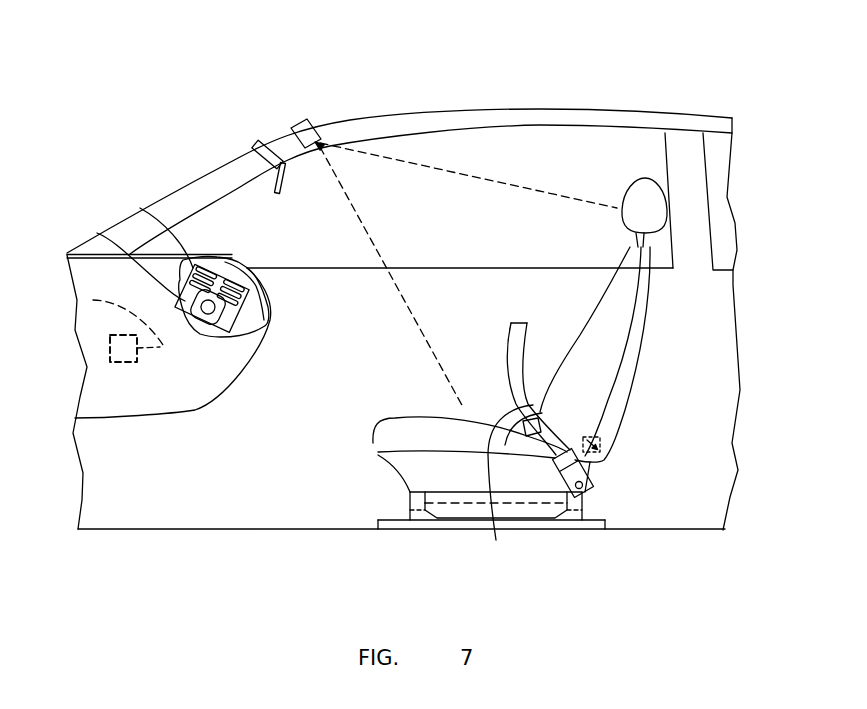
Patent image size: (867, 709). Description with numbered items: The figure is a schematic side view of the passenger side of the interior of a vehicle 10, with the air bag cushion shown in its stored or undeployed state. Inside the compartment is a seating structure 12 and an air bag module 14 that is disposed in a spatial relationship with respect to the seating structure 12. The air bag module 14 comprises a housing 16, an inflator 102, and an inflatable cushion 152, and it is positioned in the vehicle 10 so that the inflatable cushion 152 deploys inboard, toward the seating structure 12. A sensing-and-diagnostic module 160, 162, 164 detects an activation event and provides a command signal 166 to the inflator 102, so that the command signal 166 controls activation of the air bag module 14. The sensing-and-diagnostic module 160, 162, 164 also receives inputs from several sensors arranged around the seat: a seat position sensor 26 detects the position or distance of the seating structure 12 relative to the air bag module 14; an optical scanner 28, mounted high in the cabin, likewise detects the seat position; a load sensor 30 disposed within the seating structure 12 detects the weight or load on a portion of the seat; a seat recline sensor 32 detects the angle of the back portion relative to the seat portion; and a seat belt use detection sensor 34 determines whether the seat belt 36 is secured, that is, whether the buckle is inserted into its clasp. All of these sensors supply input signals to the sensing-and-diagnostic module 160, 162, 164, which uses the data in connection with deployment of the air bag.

The vehicle 10 is at (754, 108).
The seating structure 12 is at (637, 352).
The air bag module 14 is at (247, 313).
The housing 16 is at (97, 233).
The seat position sensor 26 is at (410, 515).
The optical scanner 28 is at (314, 140).
The load sensor 30 is at (577, 513).
The seat recline sensor 32 is at (607, 453).
The seat belt use detection sensor 34 is at (567, 480).
The seat belt 36 is at (527, 441).
The inflator 102 is at (210, 313).
The inflatable cushion 152 is at (140, 208).
The sensing-and-diagnostic module 160 is at (122, 362).
The sensing-and-diagnostic module 162 is at (155, 548).
The sensing-and-diagnostic module 164 is at (155, 548).
The command signal 166 is at (93, 300).